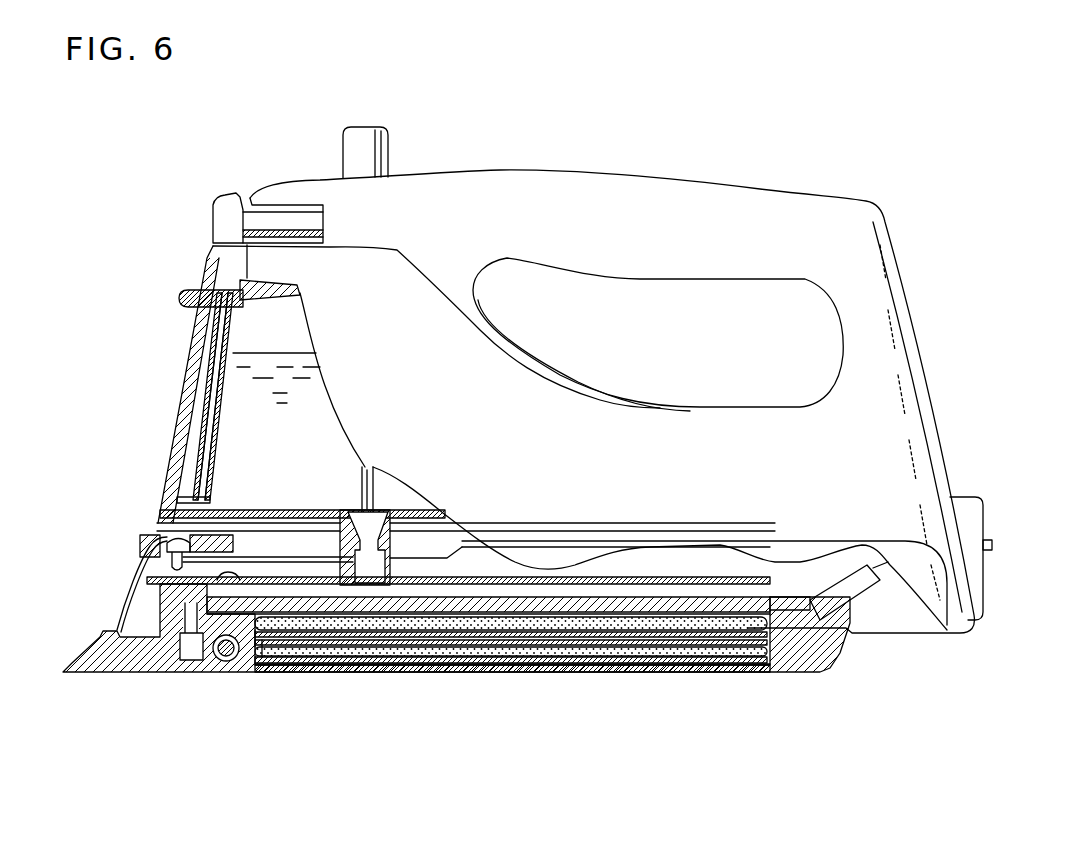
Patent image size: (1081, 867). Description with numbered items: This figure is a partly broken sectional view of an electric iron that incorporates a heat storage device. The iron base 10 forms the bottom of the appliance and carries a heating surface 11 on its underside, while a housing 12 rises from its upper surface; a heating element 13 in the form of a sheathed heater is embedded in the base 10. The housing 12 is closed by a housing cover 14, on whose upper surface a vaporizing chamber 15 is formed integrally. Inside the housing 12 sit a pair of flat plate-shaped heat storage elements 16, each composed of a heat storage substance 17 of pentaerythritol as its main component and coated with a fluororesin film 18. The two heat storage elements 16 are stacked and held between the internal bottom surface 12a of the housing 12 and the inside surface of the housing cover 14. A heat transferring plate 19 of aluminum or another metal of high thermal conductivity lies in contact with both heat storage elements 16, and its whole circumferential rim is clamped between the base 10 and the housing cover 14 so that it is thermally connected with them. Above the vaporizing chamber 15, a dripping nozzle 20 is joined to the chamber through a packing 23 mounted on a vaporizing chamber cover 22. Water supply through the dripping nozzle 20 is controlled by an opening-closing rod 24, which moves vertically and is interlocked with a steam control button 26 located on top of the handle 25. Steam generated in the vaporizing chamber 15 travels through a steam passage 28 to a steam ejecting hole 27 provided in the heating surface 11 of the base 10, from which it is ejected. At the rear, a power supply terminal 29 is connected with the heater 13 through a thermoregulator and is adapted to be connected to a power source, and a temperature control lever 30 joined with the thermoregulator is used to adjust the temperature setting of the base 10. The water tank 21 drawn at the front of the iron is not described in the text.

The iron base 10 is at (115, 677).
The heating surface 11 is at (520, 668).
The housing 12 is at (843, 650).
The internal bottom surface 12a is at (687, 658).
The heating element 13 is at (220, 680).
The housing cover 14 is at (230, 597).
The vaporizing chamber 15 is at (507, 587).
The heat storage element 16 is at (405, 663).
The heat storage substance 17 is at (736, 650).
The fluororesin film 18 is at (673, 610).
The heat transferring plate 19 is at (830, 572).
The dripping nozzle 20 is at (380, 510).
The water tank 21 is at (190, 443).
The vaporizing chamber cover 22 is at (610, 575).
The packing 23 is at (428, 580).
The opening-closing rod 24 is at (363, 490).
The handle 25 is at (650, 186).
The steam control button 26 is at (390, 128).
The steam ejecting hole 27 is at (190, 680).
The steam passage 28 is at (160, 615).
The power supply terminal 29 is at (993, 545).
The temperature control lever 30 is at (223, 212).